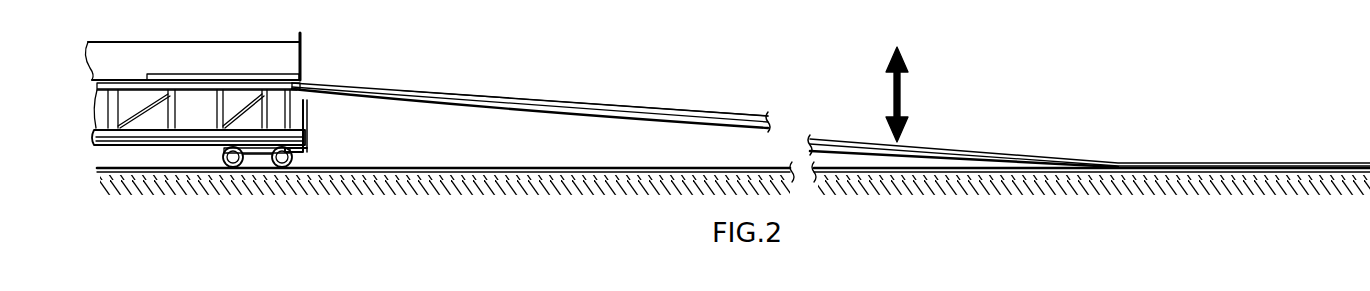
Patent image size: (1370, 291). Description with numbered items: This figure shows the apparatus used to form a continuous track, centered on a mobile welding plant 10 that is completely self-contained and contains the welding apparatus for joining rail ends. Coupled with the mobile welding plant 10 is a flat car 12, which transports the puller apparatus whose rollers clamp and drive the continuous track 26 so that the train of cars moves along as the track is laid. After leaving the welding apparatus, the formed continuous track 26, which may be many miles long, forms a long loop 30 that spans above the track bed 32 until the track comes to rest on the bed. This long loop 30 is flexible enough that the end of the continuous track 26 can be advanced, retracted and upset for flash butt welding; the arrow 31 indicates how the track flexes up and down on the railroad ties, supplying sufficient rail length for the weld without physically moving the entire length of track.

The mobile welding plant 10 is at (1019, 289).
The flat car 12 is at (175, 42).
The continuous track 26 is at (390, 83).
The long loop 30 is at (563, 98).
The arrow 31 is at (906, 108).
The track bed 32 is at (942, 172).